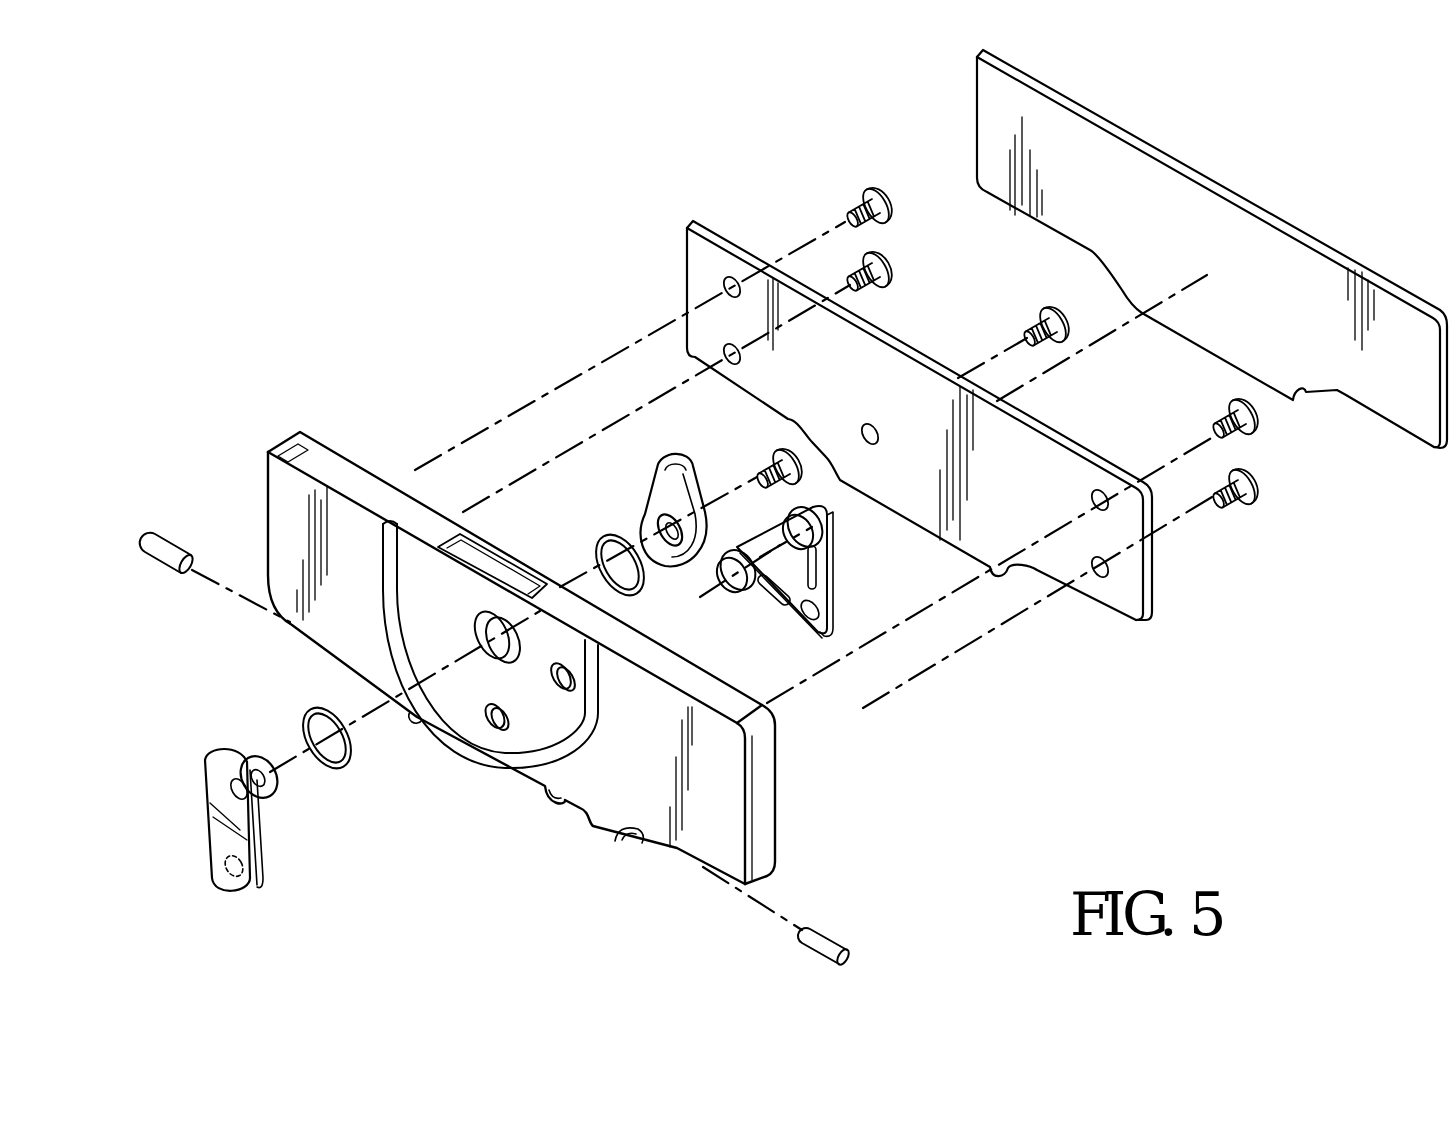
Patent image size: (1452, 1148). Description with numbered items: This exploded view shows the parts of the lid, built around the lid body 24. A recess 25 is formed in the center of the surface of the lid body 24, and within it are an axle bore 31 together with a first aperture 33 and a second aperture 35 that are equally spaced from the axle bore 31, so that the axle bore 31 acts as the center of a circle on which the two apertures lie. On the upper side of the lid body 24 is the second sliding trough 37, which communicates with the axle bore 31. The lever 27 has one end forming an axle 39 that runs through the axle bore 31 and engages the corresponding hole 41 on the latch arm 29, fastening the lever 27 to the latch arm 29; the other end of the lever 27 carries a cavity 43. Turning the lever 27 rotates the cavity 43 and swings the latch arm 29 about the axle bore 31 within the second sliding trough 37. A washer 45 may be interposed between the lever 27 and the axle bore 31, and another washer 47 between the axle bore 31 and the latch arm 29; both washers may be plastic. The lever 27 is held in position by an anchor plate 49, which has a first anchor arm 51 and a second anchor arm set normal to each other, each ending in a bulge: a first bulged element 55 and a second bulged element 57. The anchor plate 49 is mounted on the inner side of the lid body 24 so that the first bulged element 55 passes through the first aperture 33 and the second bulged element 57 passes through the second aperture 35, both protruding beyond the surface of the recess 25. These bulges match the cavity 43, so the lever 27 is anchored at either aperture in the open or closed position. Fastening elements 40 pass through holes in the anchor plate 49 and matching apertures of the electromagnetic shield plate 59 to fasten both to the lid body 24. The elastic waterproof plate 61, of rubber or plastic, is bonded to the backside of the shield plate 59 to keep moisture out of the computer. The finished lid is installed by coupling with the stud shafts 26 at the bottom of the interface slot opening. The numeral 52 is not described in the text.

The lid body 24 is at (760, 794).
The recess 25 is at (527, 743).
The stud shafts 26 is at (827, 935).
The lever 27 is at (230, 851).
The latch arm 29 is at (643, 485).
The axle bore 31 is at (483, 633).
The first aperture 33 is at (563, 694).
The second aperture 35 is at (487, 723).
The second sliding trough 37 is at (503, 573).
The axle 39 is at (277, 793).
The fastening elements 40 is at (866, 203).
The hole 41 is at (660, 527).
The cavity 43 is at (235, 897).
The washer 45 is at (333, 770).
The washer 47 is at (594, 551).
The anchor plate 49 is at (816, 596).
The first anchor arm 51 is at (825, 560).
The slot 52 is at (772, 594).
The first bulged element 55 is at (818, 531).
The second bulged element 57 is at (732, 588).
The electromagnetic shield plate 59 is at (1142, 583).
The waterproof plate 61 is at (1417, 418).